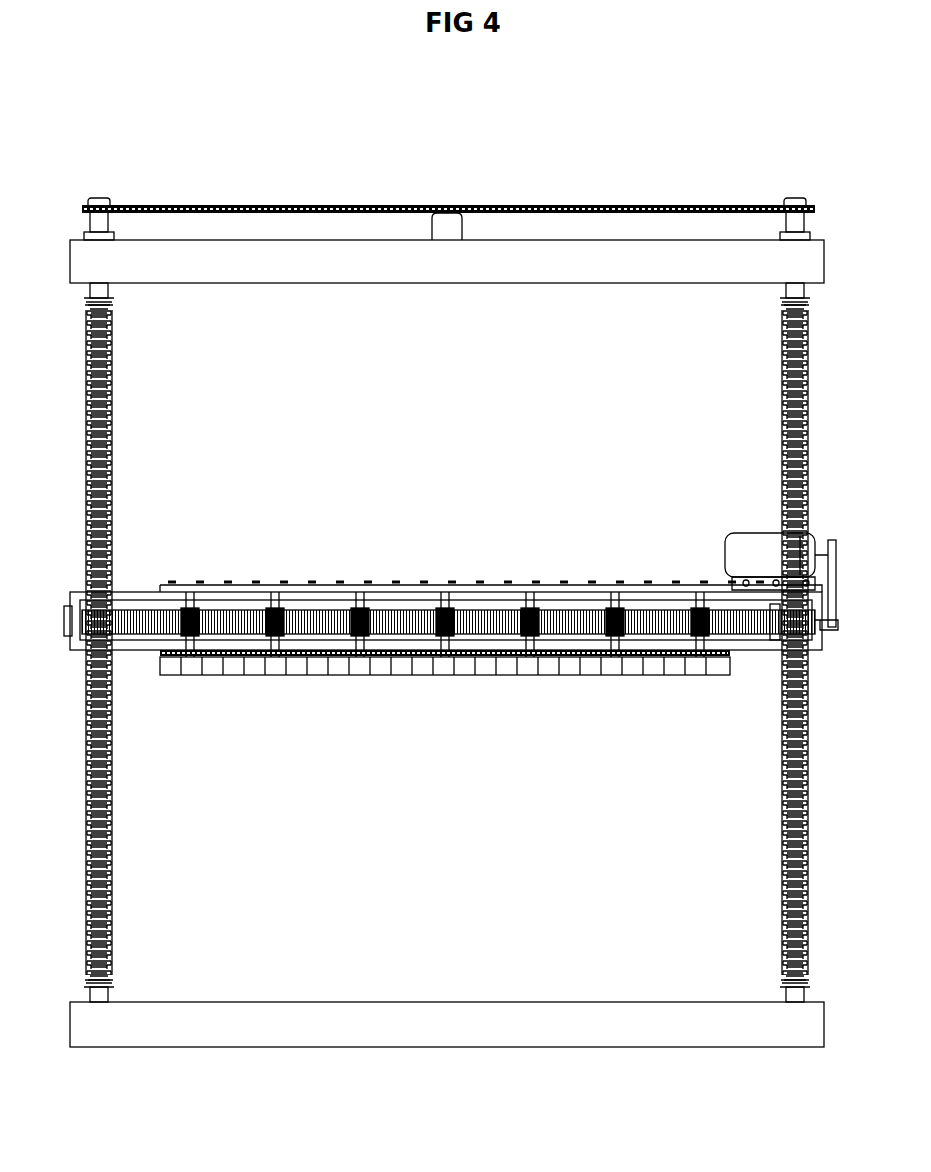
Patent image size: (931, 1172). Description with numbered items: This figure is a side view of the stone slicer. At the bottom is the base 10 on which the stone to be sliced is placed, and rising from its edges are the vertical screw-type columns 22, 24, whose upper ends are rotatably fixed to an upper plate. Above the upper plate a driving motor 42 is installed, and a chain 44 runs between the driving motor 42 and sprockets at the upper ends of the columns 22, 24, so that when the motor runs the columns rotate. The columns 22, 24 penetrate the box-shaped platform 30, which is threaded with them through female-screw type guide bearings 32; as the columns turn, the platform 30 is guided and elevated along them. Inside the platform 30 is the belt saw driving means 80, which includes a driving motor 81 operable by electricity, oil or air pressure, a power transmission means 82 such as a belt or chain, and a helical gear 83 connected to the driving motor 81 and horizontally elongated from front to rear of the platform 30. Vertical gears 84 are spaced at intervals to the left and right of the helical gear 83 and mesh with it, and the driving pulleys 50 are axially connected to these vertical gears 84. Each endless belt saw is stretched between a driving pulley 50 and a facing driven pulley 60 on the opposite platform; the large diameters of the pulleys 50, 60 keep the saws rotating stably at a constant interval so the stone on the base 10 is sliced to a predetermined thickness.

The base 10 is at (343, 1048).
The column 22 is at (808, 396).
The column 24 is at (86, 352).
The platform 30 is at (70, 592).
The guide bearing 32 is at (112, 590).
The driving motor 42 is at (465, 210).
The chain 44 is at (302, 205).
The driving pulley 50 is at (700, 666).
The driven pulley 60 is at (722, 666).
The belt saw driving means 80 is at (793, 549).
The driving motor 81 is at (760, 540).
The power transmission means 82 is at (834, 588).
The helical gear 83 is at (765, 641).
The vertical gear 84 is at (700, 606).